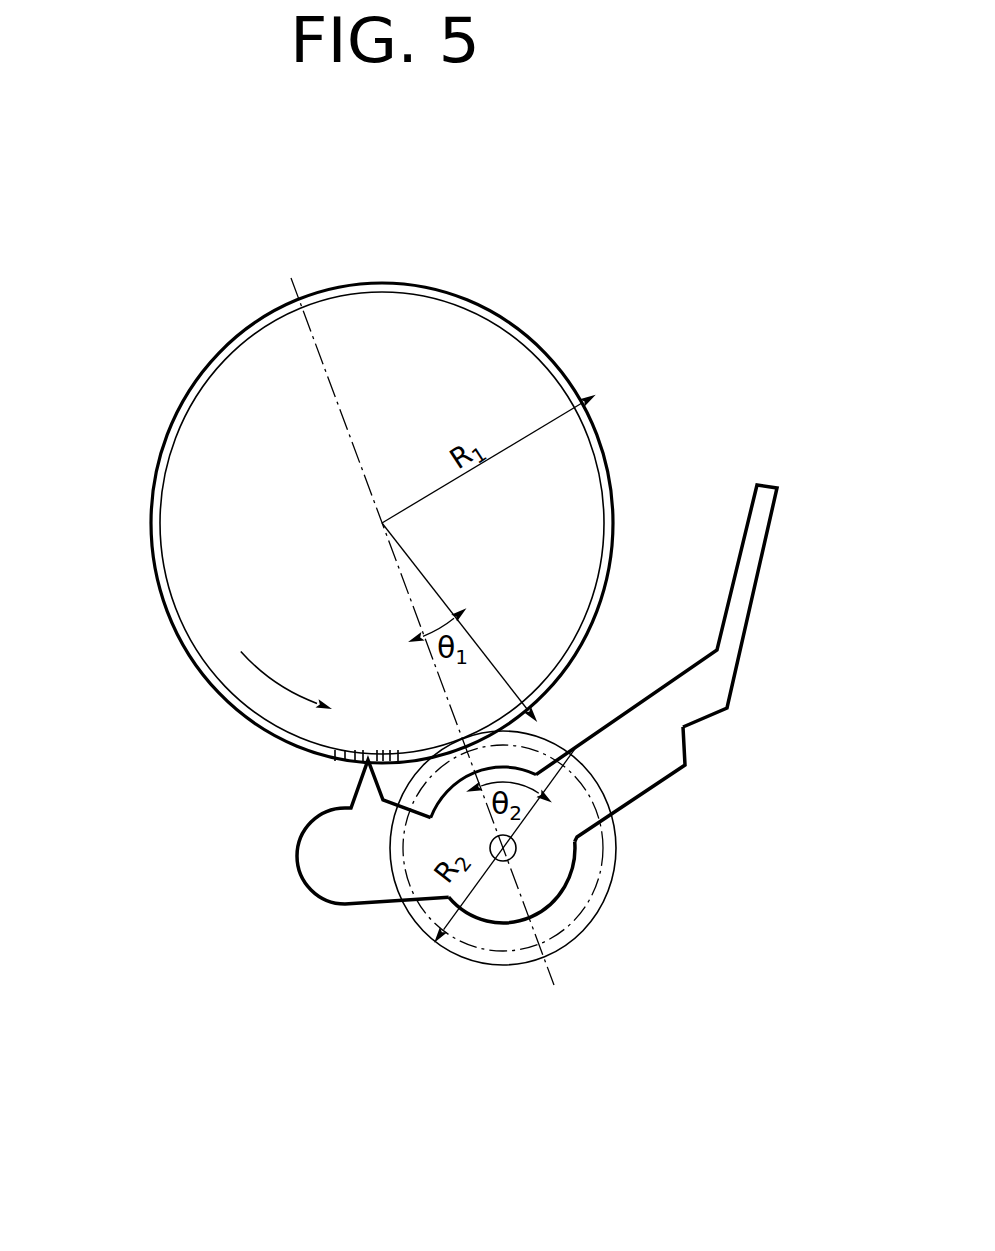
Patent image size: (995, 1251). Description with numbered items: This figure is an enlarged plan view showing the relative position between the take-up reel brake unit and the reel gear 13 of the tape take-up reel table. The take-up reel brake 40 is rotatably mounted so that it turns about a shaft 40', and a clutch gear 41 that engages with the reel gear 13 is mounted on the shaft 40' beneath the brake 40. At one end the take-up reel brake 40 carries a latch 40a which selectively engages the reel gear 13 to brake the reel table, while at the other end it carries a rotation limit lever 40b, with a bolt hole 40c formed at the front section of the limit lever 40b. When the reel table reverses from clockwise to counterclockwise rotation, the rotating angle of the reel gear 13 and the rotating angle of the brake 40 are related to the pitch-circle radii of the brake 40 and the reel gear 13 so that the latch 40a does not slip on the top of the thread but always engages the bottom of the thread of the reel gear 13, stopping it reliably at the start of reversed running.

The reel gear 13 is at (150, 562).
The take-up reel brake 40 is at (540, 915).
The latch 40a is at (362, 787).
The rotation limit lever 40b is at (742, 581).
The bolt hole 40c is at (686, 749).
The shaft 40' is at (510, 947).
The clutch gear 41 is at (603, 870).